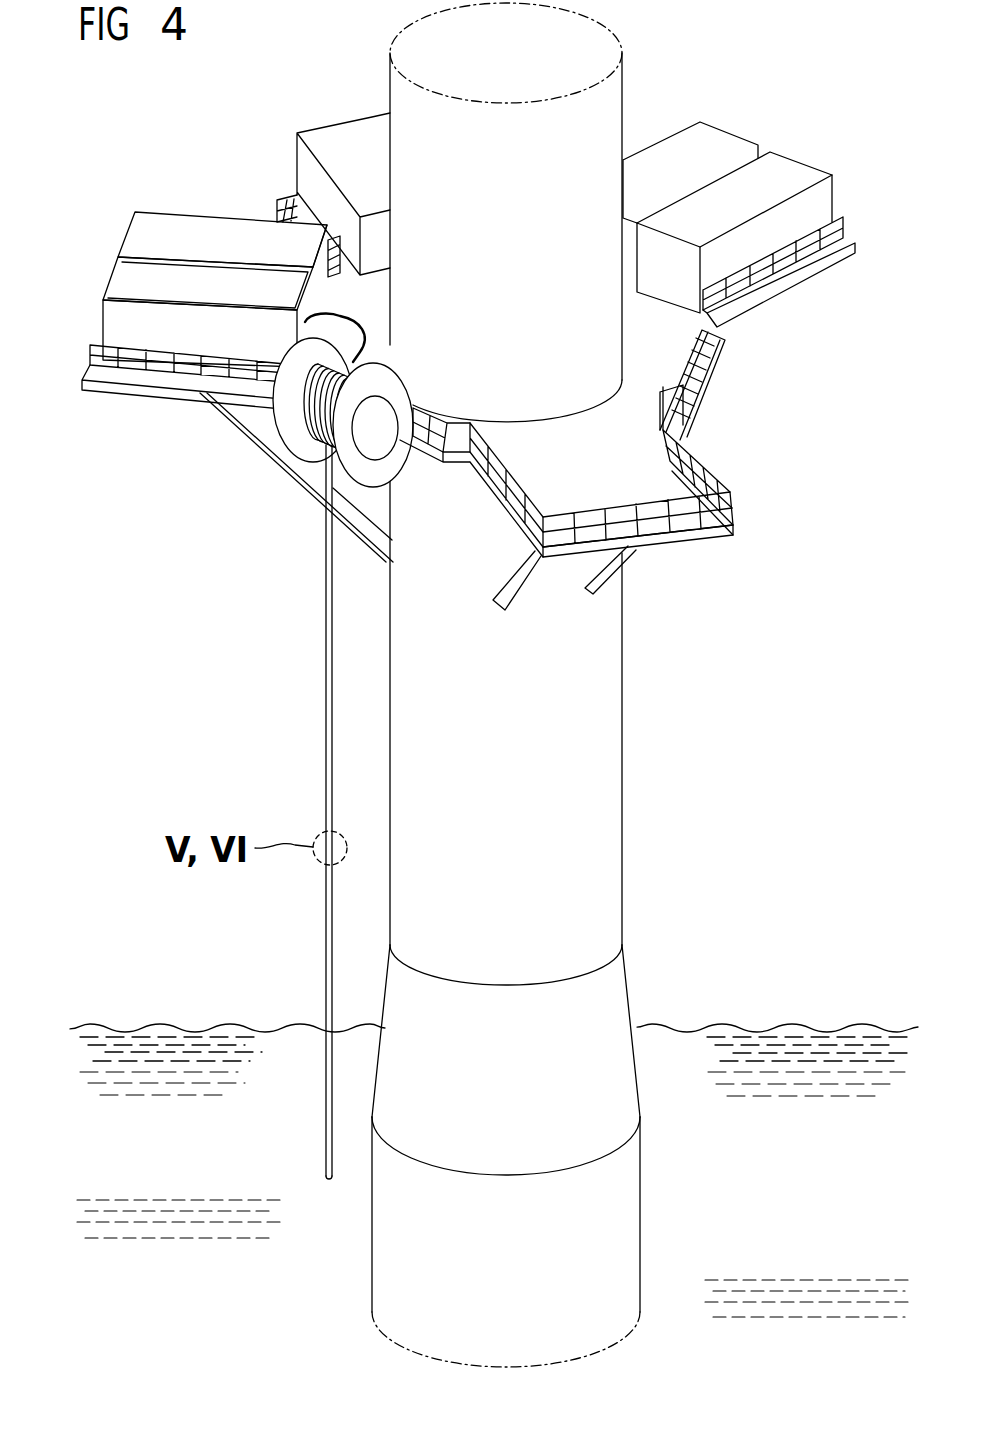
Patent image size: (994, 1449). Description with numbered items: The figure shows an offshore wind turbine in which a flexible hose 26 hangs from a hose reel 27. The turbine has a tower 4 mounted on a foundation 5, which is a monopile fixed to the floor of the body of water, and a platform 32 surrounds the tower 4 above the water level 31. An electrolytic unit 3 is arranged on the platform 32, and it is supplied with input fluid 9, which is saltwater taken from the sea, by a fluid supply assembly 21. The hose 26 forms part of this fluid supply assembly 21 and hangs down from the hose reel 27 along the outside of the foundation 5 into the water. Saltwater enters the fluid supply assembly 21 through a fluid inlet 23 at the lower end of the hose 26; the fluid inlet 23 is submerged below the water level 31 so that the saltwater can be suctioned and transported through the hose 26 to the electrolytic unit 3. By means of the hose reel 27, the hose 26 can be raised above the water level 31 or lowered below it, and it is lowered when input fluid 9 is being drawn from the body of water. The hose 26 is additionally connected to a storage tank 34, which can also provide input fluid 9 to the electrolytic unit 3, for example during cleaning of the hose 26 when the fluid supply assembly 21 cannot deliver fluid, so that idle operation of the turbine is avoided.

The electrolytic unit 3 is at (818, 52).
The tower 4 is at (610, 115).
The foundation 5 is at (628, 1215).
The input fluid 9 is at (163, 1152).
The fluid supply assembly 21 is at (262, 632).
The fluid inlet 23 is at (328, 1183).
The hose 26 is at (325, 757).
The hose reel 27 is at (283, 457).
The water level 31 is at (815, 1027).
The platform 32 is at (663, 366).
The storage tank 34 is at (128, 283).